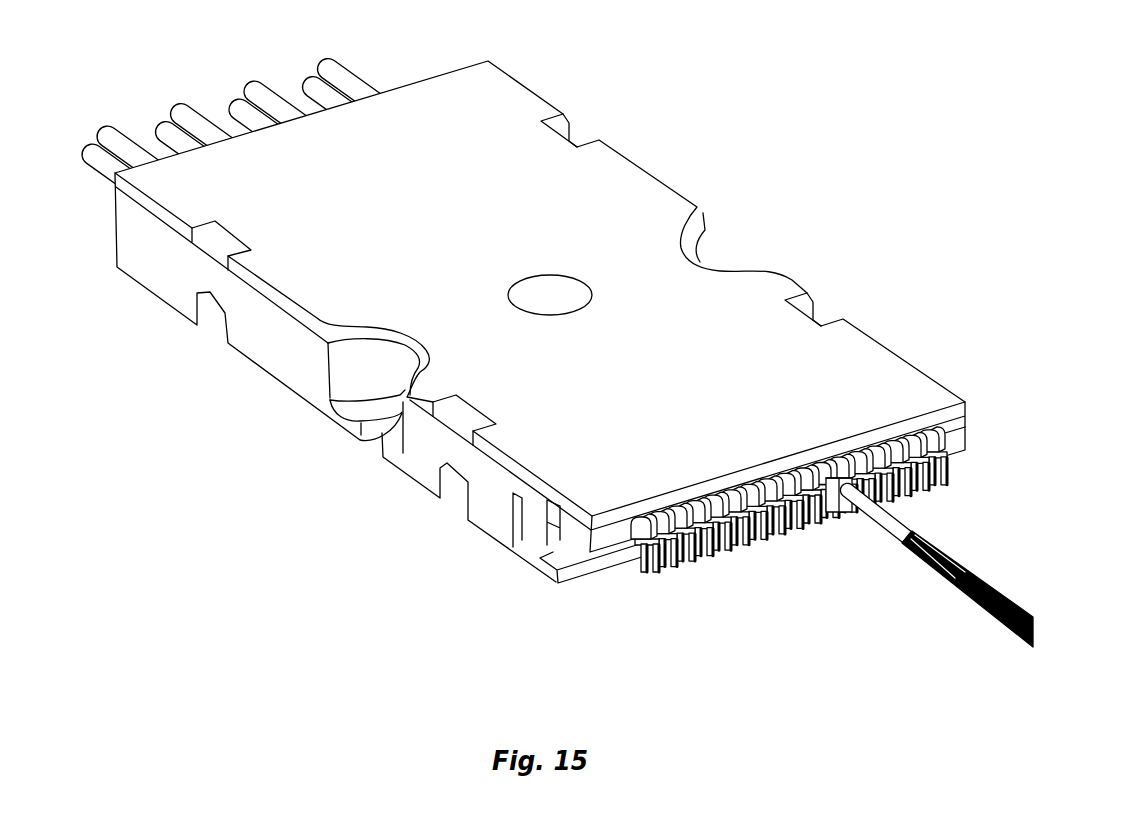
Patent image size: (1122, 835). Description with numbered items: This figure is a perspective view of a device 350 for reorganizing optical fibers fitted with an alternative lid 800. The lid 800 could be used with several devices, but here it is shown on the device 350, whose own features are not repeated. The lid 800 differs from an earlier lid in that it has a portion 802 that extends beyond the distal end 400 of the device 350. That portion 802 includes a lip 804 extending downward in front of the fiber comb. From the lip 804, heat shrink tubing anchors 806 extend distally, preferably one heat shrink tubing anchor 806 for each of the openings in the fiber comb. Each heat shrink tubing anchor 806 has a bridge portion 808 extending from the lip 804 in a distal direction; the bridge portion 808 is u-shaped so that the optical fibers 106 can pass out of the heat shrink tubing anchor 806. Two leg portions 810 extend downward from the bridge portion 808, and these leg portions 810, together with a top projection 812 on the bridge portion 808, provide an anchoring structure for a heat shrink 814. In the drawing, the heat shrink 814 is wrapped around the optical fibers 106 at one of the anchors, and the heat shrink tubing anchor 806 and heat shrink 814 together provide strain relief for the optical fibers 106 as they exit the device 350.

The lid 800 is at (866, 347).
The portion 802 is at (956, 361).
The top projection 812 is at (955, 433).
The heat shrink tubing anchor 806 is at (957, 475).
The heat shrink 814 is at (890, 510).
The optical fibers 106 is at (1002, 595).
The leg portions 810 is at (800, 521).
The bridge portion 808 is at (640, 546).
The lip 804 is at (613, 552).
The distal end 400 is at (555, 599).
The device 350 is at (229, 389).